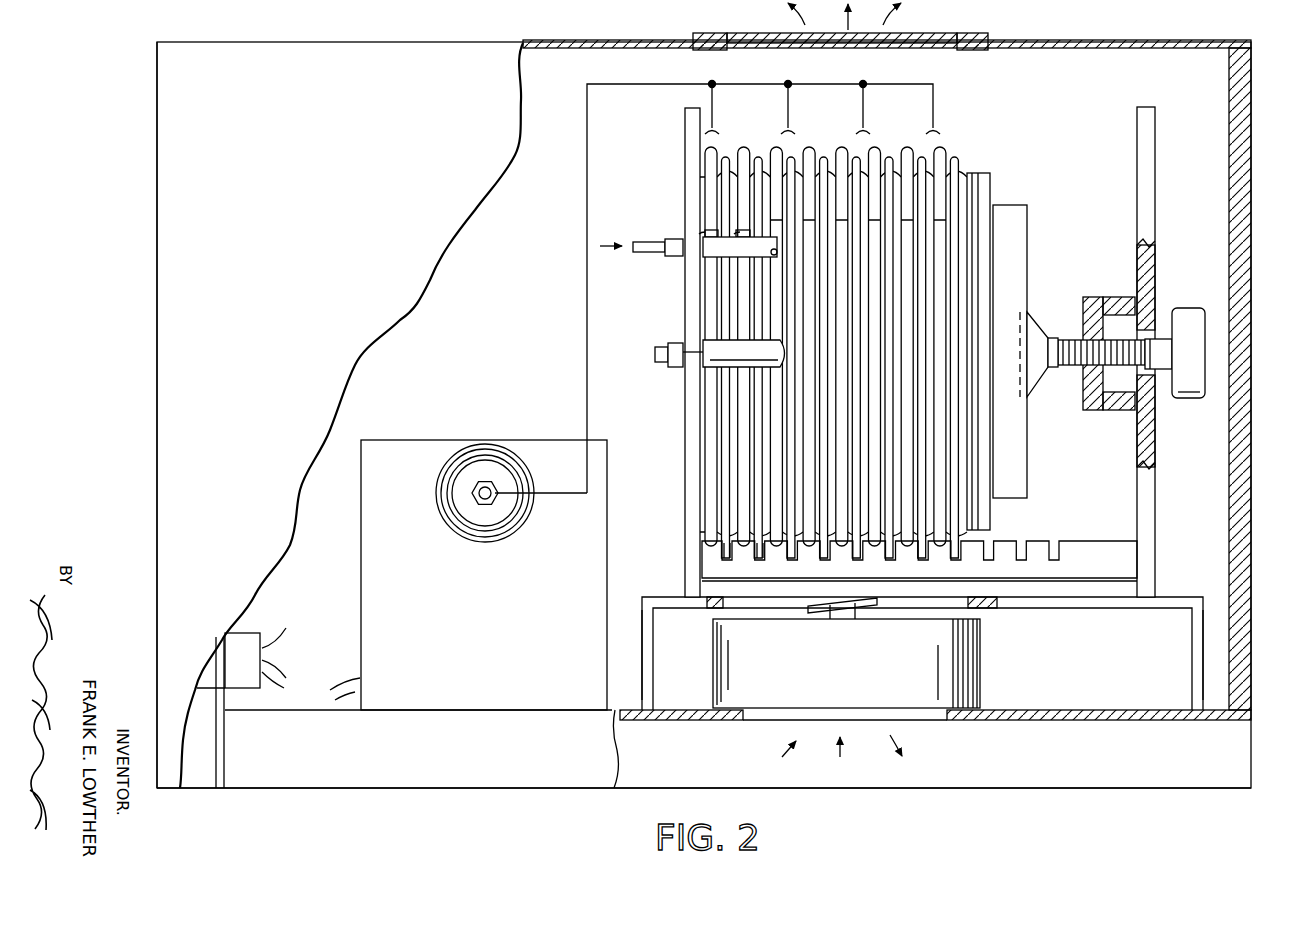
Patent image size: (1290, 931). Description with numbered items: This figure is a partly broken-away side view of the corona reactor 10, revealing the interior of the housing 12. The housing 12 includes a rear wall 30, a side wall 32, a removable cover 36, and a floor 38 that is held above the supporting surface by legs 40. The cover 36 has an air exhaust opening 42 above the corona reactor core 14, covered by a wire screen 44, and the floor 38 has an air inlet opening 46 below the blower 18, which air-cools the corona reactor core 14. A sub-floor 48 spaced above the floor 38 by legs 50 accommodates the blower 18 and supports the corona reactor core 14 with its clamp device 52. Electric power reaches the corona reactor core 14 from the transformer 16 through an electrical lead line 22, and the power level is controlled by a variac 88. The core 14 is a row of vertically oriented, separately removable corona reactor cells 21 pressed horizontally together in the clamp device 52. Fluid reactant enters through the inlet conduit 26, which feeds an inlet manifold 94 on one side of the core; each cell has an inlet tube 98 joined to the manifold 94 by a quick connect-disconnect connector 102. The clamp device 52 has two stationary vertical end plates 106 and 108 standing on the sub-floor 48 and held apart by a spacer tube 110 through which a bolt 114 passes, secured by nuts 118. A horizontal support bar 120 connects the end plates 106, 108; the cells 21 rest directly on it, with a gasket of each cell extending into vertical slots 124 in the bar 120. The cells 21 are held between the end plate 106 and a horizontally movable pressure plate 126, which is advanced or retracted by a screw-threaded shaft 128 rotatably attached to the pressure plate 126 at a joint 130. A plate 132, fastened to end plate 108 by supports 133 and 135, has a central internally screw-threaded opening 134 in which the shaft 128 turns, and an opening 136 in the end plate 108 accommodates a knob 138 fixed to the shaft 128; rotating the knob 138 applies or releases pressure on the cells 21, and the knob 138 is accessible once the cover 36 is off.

The corona reactor 10 is at (126, 261).
The housing 12 is at (160, 146).
The corona reactor core 14 is at (975, 170).
The transformer 16 is at (484, 575).
The blower 18 is at (846, 663).
The corona reactor cells 21 is at (831, 163).
The electrical lead line 22 is at (587, 335).
The inlet conduit 26 is at (636, 244).
The rear wall 30 is at (1242, 182).
The side wall 32 is at (351, 415).
The cover 36 is at (1096, 40).
The floor 38 is at (1118, 720).
The legs 40 is at (1192, 767).
The air exhaust opening 42 is at (968, 50).
The wire screen 44 is at (900, 41).
The air inlet opening 46 is at (935, 720).
The sub-floor 48 is at (1078, 608).
The legs 50 is at (653, 675).
The clamp device 52 is at (1119, 331).
The variac 88 is at (249, 638).
The inlet manifold 94 is at (716, 254).
The inlet tube 98 is at (764, 146).
The connectors 102 is at (738, 228).
The end plate 106 is at (684, 142).
The end plate 108 is at (1153, 352).
The spacer tube 110 is at (715, 364).
The bolt 114 is at (655, 362).
The nuts 118 is at (677, 336).
The horizontal support bar 120 is at (1084, 540).
The vertical slots 124 is at (758, 548).
The pressure plate 126 is at (1022, 257).
The screw-threaded shaft 128 is at (1082, 373).
The joint 130 is at (1032, 398).
The plate 132 is at (1092, 410).
The support 133 is at (1108, 297).
The internally screw-threaded opening 134 is at (1090, 370).
The support 135 is at (1126, 410).
The opening 136 is at (1154, 339).
The knob 138 is at (1195, 398).